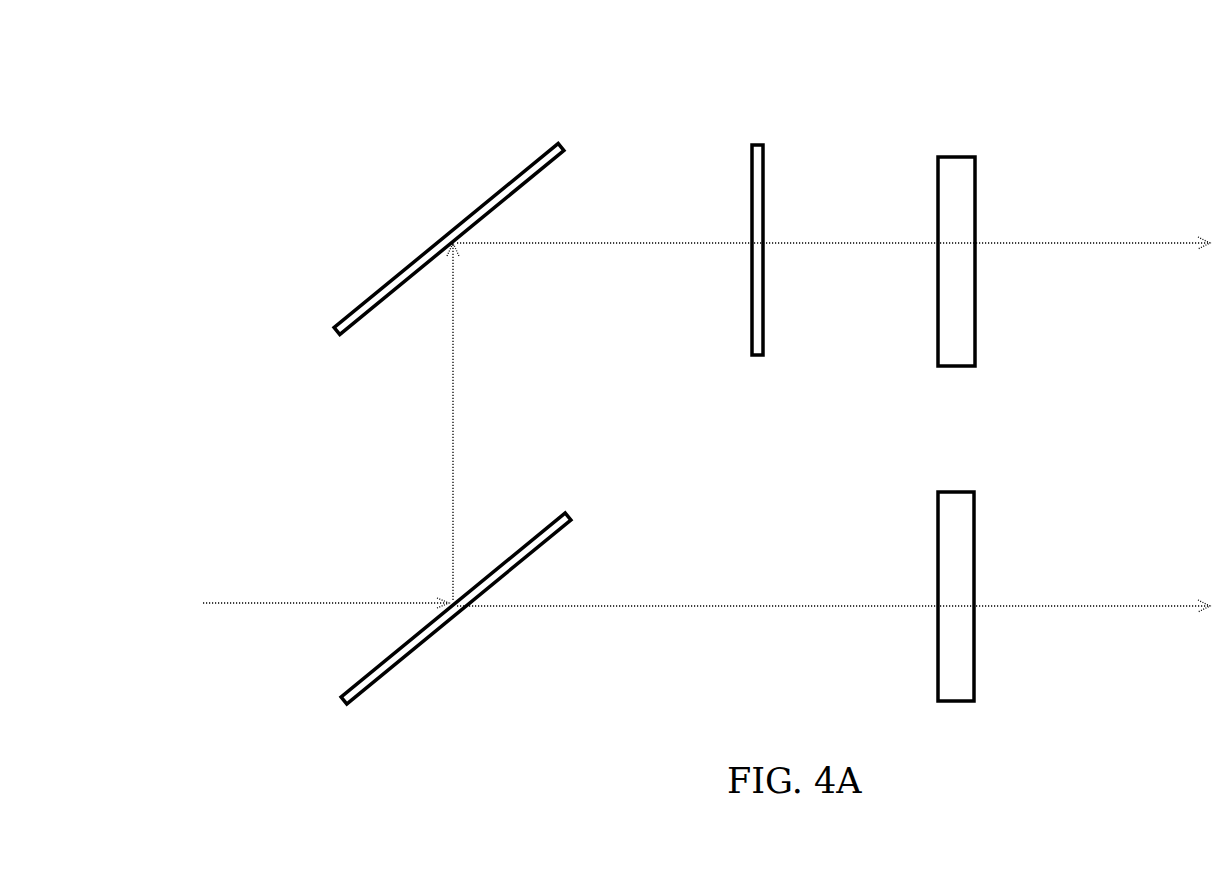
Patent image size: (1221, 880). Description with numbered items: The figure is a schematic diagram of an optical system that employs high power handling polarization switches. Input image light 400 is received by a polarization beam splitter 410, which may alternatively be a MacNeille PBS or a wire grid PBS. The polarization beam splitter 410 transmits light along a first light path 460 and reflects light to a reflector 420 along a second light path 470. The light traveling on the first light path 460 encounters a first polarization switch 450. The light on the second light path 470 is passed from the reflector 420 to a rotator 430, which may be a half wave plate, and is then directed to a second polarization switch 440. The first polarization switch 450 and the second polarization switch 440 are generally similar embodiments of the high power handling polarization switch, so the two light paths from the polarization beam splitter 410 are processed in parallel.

The input image light 400 is at (253, 595).
The polarization beam splitter 410 is at (430, 657).
The reflector 420 is at (388, 260).
The rotator 430 is at (723, 188).
The second polarization switch 440 is at (1000, 203).
The first polarization switch 450 is at (987, 653).
The first light path 460 is at (688, 630).
The second light path 470 is at (613, 265).